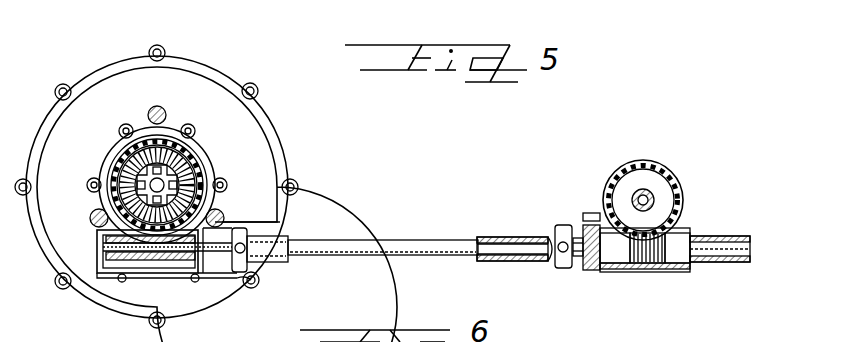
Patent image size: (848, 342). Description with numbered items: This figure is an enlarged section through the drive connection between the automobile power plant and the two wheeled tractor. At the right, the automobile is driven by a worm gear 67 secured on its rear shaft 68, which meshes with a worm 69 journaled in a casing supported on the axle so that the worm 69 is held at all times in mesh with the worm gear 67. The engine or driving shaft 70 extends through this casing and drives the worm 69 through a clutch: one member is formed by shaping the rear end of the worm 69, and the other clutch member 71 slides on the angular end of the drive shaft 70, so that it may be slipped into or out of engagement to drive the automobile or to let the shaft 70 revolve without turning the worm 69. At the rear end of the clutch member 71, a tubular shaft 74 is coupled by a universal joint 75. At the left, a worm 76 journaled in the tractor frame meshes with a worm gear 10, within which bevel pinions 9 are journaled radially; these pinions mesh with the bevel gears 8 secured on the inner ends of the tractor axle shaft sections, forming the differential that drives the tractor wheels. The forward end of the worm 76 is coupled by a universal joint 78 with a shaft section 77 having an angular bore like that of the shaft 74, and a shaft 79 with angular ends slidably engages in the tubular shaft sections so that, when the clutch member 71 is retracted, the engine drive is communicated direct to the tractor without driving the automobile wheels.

The bevel gear 8 is at (188, 163).
The bevel pinion 9 is at (138, 146).
The worm gear 10 is at (170, 142).
The worm gear 67 is at (668, 203).
The rear shaft 68 is at (647, 196).
The worm 69 is at (642, 260).
The driving shaft 70 is at (723, 247).
The clutch member 71 is at (580, 258).
The shaft 74 is at (511, 238).
The universal joint 75 is at (567, 225).
The worm 76 is at (155, 260).
The shaft section 77 is at (287, 242).
The universal joint 78 is at (250, 258).
The shaft 79 is at (367, 245).